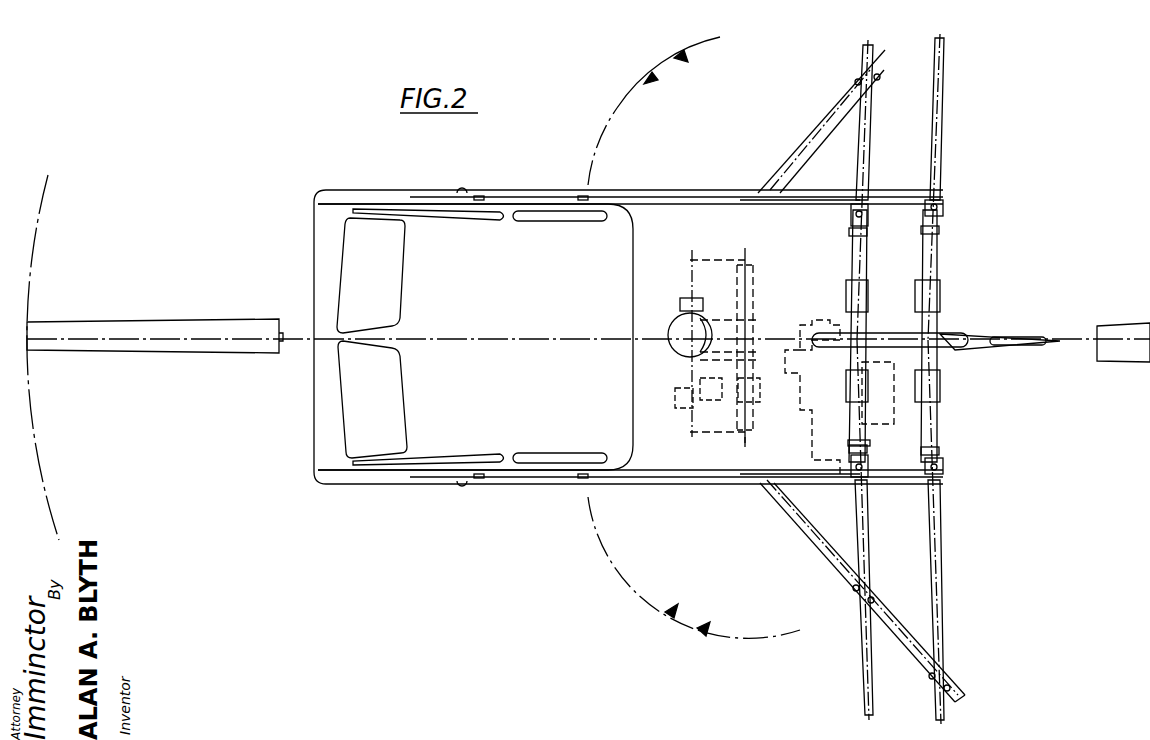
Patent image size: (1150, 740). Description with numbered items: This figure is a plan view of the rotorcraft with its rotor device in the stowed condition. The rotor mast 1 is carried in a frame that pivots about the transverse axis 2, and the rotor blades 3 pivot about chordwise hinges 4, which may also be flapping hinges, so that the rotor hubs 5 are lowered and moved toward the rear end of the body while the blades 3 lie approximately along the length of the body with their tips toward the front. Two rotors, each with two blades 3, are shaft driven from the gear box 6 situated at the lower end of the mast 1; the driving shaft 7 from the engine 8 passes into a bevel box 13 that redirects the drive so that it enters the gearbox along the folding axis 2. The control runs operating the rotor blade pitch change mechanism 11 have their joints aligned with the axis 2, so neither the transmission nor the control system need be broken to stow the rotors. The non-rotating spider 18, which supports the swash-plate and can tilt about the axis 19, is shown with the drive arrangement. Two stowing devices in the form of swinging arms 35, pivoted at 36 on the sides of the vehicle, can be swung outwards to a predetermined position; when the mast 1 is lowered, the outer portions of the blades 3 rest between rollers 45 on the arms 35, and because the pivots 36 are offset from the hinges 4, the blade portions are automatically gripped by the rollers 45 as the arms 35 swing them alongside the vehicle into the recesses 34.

The rotor mast 1 is at (775, 337).
The transverse axis 2 is at (692, 287).
The rotor blades 3 is at (862, 675).
The chordwise hinges 4 is at (866, 455).
The rotor hubs 5 is at (860, 347).
The gear box 6 is at (682, 356).
The driving shaft 7 is at (722, 395).
The engine 8 is at (839, 397).
The rotor blade pitch change mechanism 11 is at (730, 384).
The bevel box 13 is at (688, 392).
The spider 18 is at (746, 362).
The tilt axis 19 is at (746, 442).
The recesses 34 is at (398, 481).
The swinging arms 35 is at (826, 126).
The pivot of swinging arms 36 is at (765, 203).
The rollers 45 is at (866, 592).